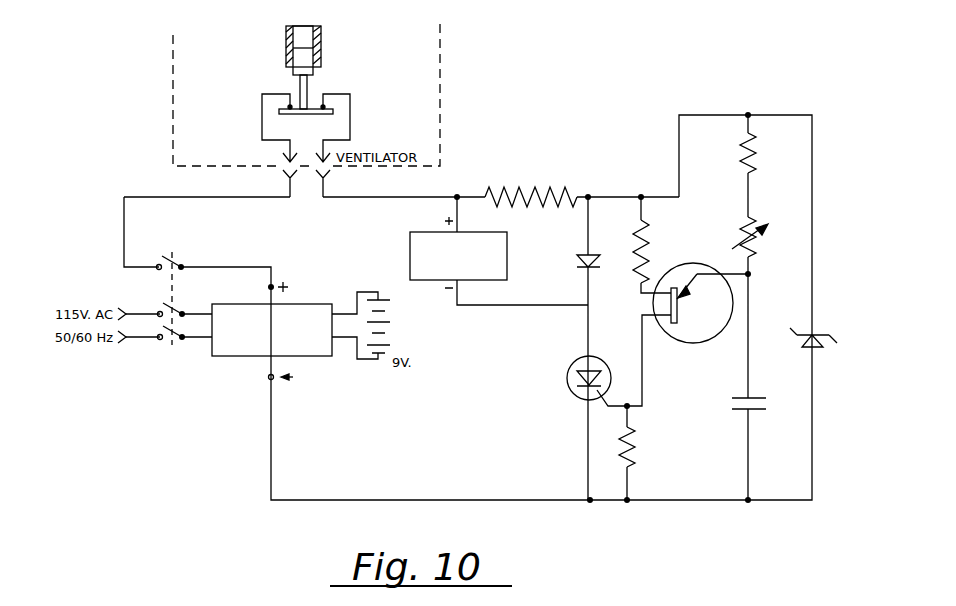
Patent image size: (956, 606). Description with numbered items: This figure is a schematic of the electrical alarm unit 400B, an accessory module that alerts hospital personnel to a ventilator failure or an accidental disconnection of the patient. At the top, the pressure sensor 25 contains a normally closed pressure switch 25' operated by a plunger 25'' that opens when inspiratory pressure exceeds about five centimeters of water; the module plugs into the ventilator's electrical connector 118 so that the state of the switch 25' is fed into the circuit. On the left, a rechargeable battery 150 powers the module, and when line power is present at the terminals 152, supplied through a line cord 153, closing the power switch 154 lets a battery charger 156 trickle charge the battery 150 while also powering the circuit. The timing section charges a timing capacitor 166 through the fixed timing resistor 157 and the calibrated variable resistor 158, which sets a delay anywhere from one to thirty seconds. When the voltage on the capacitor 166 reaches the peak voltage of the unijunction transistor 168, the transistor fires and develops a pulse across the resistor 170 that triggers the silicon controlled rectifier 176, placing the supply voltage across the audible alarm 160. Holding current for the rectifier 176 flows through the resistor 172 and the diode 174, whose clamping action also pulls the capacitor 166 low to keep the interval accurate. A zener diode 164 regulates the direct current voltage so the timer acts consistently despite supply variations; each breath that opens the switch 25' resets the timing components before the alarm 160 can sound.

The pressure sensor 25 is at (306, 94).
The pressure switch 25' is at (264, 121).
The plunger 25'' is at (330, 67).
The electrical connector 118 is at (288, 170).
The rechargeable battery 150 is at (385, 300).
The terminals 152 is at (158, 343).
The line cord 153 is at (142, 312).
The power switch 154 is at (170, 340).
The battery charger 156 is at (317, 357).
The timing resistor 157 is at (738, 142).
The variable resistor 158 is at (742, 228).
The audible alarm 160 is at (421, 232).
The zener diode 164 is at (815, 333).
The timing capacitor 166 is at (733, 410).
The unijunction transistor 168 is at (699, 345).
The resistor 170 is at (632, 453).
The resistor 172 is at (513, 187).
The diode 174 is at (577, 259).
The silicon controlled rectifier 176 is at (567, 380).
The electrical alarm unit 400B is at (219, 443).